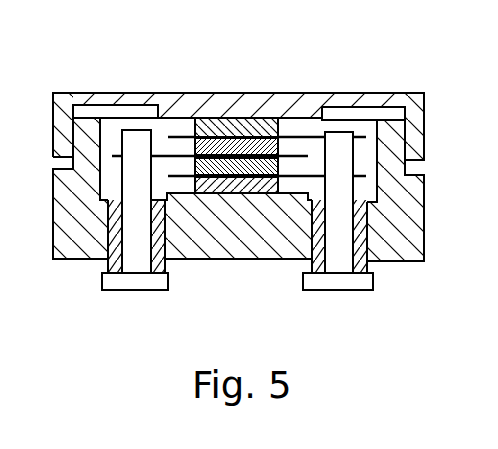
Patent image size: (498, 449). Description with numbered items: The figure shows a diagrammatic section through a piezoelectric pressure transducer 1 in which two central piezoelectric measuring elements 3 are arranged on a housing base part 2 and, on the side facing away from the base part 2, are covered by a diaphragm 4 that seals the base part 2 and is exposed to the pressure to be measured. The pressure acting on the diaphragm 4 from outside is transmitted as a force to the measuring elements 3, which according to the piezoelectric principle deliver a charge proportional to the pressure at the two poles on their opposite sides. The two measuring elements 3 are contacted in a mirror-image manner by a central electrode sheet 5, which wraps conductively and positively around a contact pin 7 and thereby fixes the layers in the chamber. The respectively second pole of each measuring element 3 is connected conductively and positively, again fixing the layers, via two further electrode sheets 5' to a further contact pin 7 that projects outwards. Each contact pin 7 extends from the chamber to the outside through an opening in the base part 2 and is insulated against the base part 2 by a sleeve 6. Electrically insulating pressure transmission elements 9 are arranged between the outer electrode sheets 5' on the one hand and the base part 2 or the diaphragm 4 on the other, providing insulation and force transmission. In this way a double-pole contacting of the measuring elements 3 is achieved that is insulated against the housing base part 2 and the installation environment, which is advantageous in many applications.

The piezoelectric pressure transducer 1 is at (256, 178).
The housing base part 2 is at (70, 232).
The piezoelectric measuring element 3 is at (260, 135).
The diaphragm 4 is at (110, 96).
The electrode sheet 5 is at (210, 92).
The further electrode sheet 5' is at (267, 183).
The sleeve 6 is at (102, 275).
The contact pin 7 is at (142, 240).
The pressure transmission element 9 is at (212, 122).